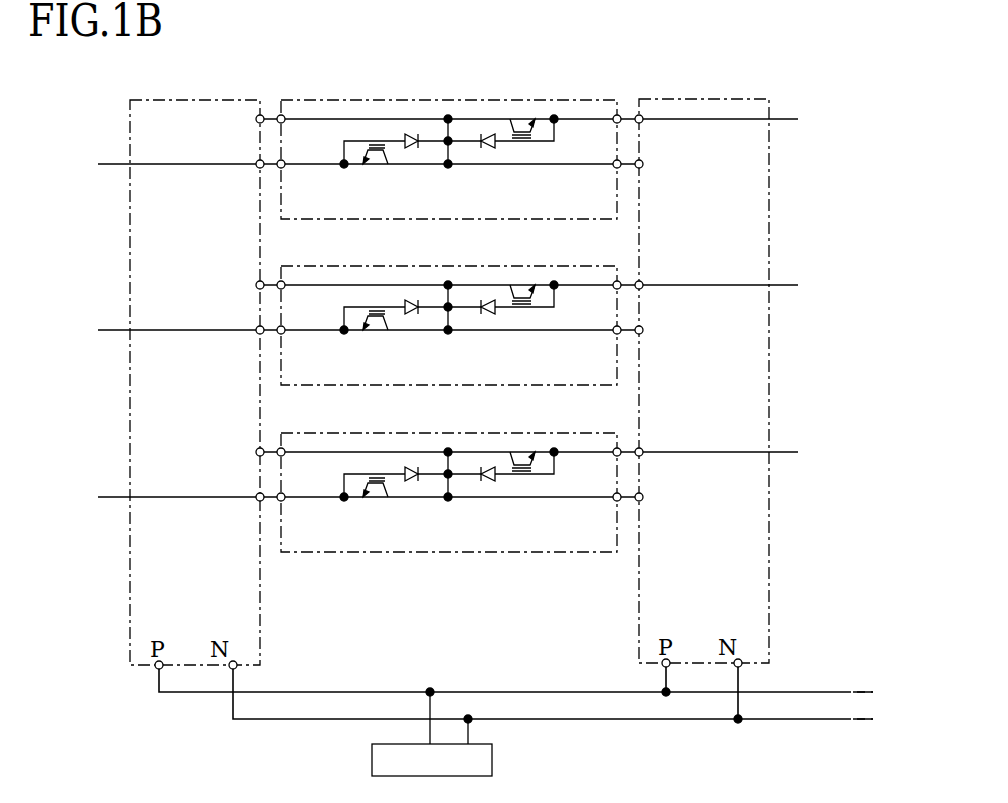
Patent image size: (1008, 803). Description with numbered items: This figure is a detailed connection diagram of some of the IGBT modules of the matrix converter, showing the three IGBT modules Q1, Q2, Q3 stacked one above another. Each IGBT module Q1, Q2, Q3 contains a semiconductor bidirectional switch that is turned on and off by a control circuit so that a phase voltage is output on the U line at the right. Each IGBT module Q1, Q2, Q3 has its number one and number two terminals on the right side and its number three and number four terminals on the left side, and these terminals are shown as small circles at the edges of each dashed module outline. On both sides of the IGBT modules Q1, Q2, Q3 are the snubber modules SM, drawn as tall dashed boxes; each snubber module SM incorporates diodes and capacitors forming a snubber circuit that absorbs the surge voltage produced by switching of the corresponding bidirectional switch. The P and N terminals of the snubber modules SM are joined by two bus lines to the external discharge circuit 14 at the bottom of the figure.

The external discharge circuit 14 is at (492, 763).
The IGBT module Q1 is at (371, 99).
The IGBT module Q2 is at (371, 265).
The IGBT module Q3 is at (371, 432).
The snubber module SM is at (262, 640).